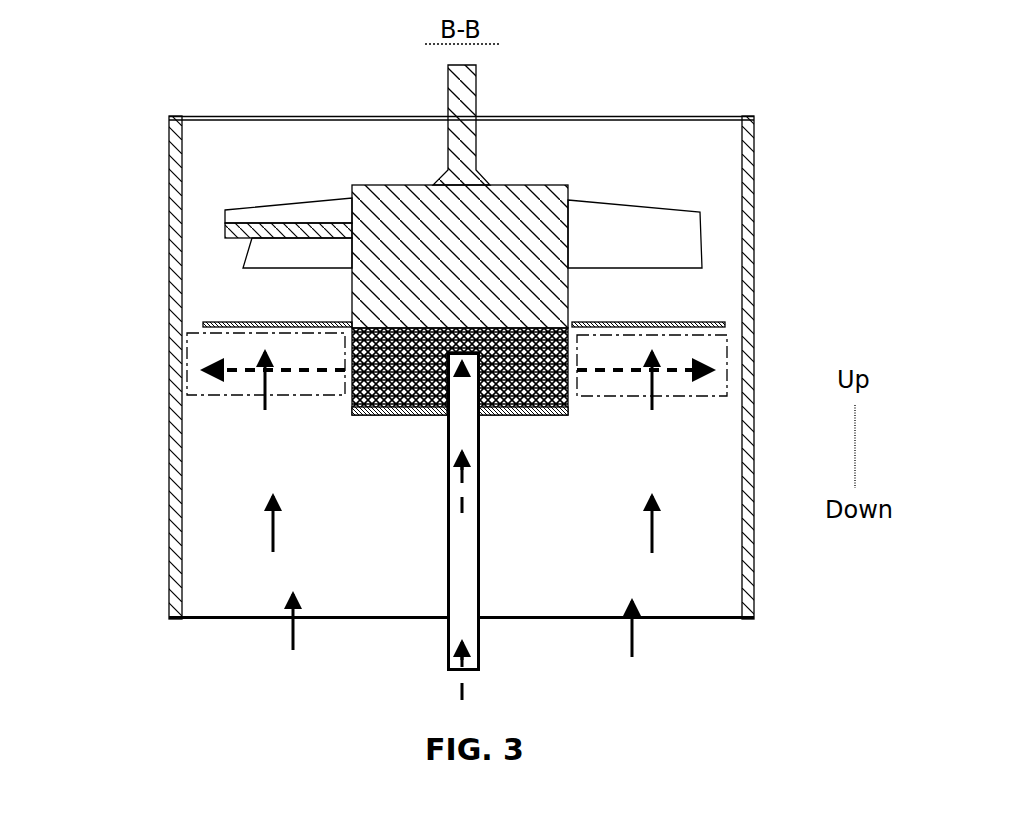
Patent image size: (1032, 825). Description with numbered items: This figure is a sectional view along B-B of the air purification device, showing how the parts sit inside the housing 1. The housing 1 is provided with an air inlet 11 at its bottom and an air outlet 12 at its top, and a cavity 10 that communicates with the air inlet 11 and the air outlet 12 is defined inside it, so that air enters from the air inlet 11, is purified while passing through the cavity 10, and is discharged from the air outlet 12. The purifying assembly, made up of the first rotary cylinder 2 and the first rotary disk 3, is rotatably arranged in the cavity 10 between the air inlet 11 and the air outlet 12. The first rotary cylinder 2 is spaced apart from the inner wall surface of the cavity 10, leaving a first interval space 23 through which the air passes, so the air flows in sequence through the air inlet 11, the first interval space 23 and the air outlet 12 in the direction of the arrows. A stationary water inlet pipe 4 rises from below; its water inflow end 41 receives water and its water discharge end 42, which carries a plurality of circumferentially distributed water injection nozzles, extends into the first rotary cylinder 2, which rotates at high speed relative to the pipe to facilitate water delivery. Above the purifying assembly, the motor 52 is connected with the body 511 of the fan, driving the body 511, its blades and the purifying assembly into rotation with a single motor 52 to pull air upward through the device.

The housing 1 is at (747, 543).
The cavity 10 is at (693, 553).
The air inlet 11 is at (545, 623).
The air outlet 12 is at (533, 115).
The first rotary cylinder 2 is at (575, 380).
The first interval space 23 is at (680, 390).
The first rotary disk 3 is at (260, 322).
The water inlet pipe 4 is at (445, 537).
The water inflow end 41 is at (453, 660).
The water discharge end 42 is at (345, 388).
The body 511 is at (318, 217).
The motor 52 is at (447, 117).